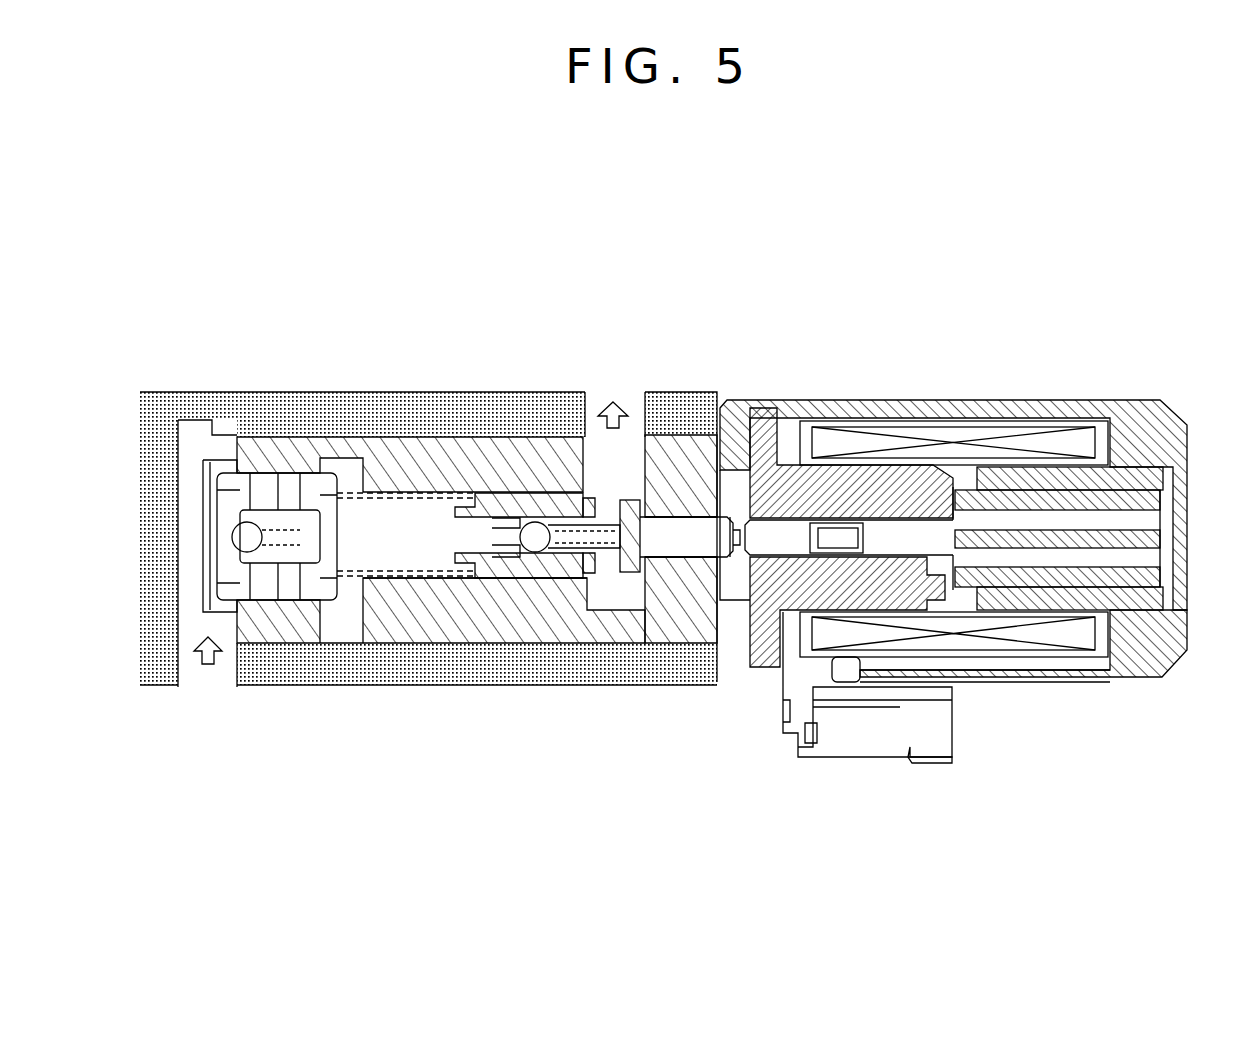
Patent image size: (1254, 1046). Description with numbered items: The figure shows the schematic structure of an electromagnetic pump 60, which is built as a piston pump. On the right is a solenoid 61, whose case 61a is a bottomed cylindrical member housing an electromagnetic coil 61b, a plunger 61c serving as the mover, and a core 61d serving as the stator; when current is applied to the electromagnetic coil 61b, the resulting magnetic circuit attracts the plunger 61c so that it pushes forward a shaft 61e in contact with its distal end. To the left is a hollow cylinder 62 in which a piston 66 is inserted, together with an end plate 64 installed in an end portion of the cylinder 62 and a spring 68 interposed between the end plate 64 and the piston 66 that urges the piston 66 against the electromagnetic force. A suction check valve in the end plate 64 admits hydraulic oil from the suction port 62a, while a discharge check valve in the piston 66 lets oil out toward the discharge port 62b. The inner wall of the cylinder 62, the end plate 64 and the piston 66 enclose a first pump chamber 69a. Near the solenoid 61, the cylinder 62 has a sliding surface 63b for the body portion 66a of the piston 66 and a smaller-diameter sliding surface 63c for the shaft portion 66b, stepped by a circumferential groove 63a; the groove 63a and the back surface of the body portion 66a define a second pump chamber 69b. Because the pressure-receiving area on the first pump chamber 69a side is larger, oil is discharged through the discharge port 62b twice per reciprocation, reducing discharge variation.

The electromagnetic pump 60 is at (1003, 251).
The solenoid 61 is at (1186, 393).
The case 61a is at (1140, 660).
The electromagnetic coil 61b is at (1065, 442).
The plunger 61c is at (987, 497).
The core 61d is at (833, 495).
The shaft 61e is at (905, 530).
The cylinder 62 is at (440, 488).
The suction port 62a is at (208, 672).
The discharge port 62b is at (608, 387).
The groove 63a is at (655, 612).
The sliding surface 63b is at (558, 583).
The sliding surface 63c is at (688, 540).
The end plate 64 is at (268, 498).
The piston 66 is at (558, 491).
The body portion 66a is at (498, 492).
The shaft portion 66b is at (683, 533).
The spring 68 is at (387, 494).
The first pump chamber 69a is at (441, 556).
The second pump chamber 69b is at (636, 608).